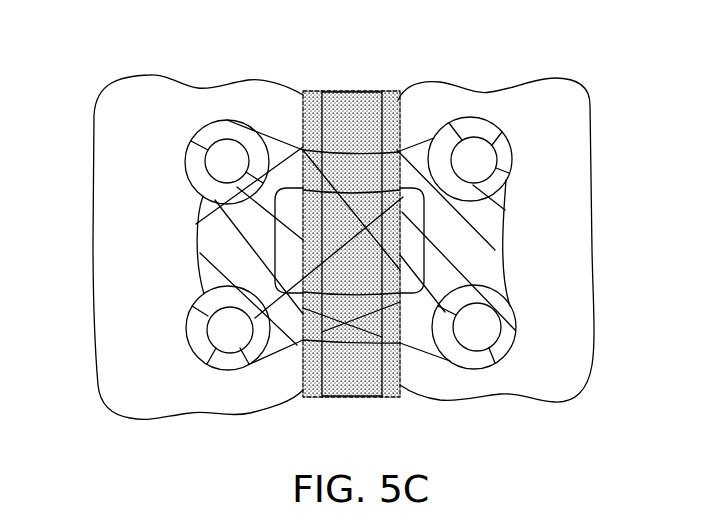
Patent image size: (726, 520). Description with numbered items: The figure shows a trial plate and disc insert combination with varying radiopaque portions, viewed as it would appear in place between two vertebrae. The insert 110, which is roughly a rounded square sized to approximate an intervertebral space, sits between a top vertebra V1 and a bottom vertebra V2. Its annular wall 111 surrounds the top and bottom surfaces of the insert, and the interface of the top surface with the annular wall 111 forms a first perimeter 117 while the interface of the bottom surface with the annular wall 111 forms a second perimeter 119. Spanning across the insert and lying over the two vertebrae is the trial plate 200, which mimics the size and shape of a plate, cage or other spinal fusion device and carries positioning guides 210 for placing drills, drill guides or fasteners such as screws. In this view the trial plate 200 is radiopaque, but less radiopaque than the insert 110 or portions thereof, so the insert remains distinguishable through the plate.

The insert 110 is at (368, 223).
The annular wall 111 is at (353, 380).
The first perimeter 117 is at (308, 97).
The second perimeter 119 is at (398, 97).
The trial plate 200 is at (277, 145).
The positioning guides 210 is at (227, 161).
The top vertebra V1 is at (107, 147).
The bottom vertebra V2 is at (587, 224).